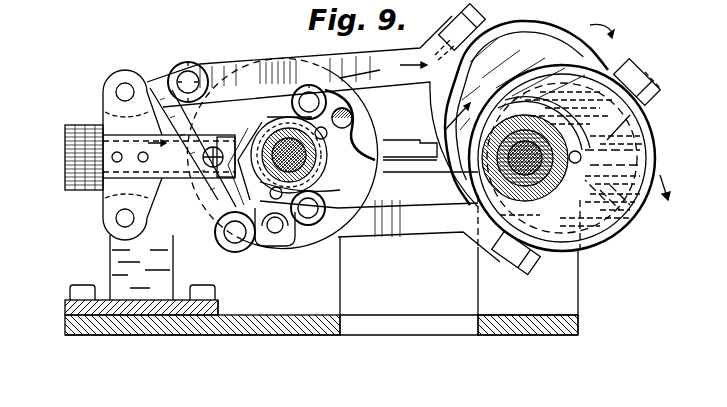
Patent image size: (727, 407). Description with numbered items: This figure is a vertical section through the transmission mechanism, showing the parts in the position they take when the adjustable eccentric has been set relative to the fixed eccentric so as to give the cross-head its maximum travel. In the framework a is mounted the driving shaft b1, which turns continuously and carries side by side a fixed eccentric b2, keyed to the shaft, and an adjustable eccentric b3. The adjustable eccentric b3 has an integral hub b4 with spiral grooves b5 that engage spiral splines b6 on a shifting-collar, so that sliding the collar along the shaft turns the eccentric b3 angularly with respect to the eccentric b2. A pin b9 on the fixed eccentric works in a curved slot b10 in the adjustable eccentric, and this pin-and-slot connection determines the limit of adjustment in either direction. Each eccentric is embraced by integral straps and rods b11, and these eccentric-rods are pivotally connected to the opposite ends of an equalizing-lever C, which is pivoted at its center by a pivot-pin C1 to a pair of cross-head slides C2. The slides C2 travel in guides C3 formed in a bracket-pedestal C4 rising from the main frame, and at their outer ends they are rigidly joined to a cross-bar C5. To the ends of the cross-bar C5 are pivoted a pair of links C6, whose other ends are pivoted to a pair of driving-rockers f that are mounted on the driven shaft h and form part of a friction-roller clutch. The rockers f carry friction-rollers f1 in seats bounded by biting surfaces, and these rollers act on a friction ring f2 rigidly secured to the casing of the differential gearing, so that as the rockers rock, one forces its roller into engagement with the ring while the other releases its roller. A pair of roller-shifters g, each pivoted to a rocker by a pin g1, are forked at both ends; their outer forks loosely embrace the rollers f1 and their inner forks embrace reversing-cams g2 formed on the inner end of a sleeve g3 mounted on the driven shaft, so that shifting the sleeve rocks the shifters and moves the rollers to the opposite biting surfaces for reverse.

The equalizing-lever C is at (214, 218).
The pivot-pin C1 is at (204, 160).
The cross-head slides C2 is at (105, 205).
The guides C3 is at (70, 156).
The bracket-pedestal C4 is at (118, 262).
The cross-bar C5 is at (105, 107).
The links C6 is at (185, 75).
The framework a is at (345, 312).
The driving shaft b1 is at (478, 178).
The fixed eccentric b2 is at (530, 45).
The adjustable eccentric b3 is at (640, 122).
The hub b4 is at (547, 139).
The spiral grooves b5 is at (537, 118).
The spiral splines b6 is at (572, 163).
The pin b9 is at (582, 158).
The curved slot b10 is at (562, 126).
The eccentric straps and rods b11 is at (323, 142).
The driving-rockers f is at (335, 100).
The friction-rollers f1 is at (354, 113).
The friction band or ring f2 is at (305, 248).
The roller-shifters g is at (262, 184).
The pin g1 is at (383, 68).
The reversing-cams g2 is at (292, 112).
The sleeve g3 is at (275, 140).
The shaft h is at (328, 150).